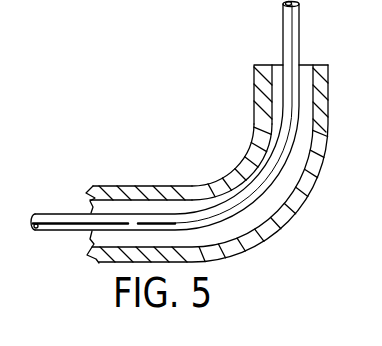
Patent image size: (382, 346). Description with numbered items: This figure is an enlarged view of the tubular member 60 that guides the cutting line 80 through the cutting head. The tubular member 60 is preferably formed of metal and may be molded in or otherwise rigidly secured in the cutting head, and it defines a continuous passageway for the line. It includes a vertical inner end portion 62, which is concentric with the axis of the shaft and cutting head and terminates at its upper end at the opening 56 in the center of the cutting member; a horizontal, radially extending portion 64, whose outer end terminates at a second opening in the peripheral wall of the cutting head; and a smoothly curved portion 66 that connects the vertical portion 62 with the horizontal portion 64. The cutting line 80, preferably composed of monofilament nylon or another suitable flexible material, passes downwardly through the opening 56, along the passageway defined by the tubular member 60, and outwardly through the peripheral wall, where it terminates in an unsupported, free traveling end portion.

The opening 56 is at (312, 58).
The tubular member 60 is at (177, 182).
The vertical inner end portion 62 is at (254, 76).
The horizontal, radially extending portion 64 is at (122, 187).
The smoothly curved portion 66 is at (250, 138).
The cutting line 80 is at (80, 231).